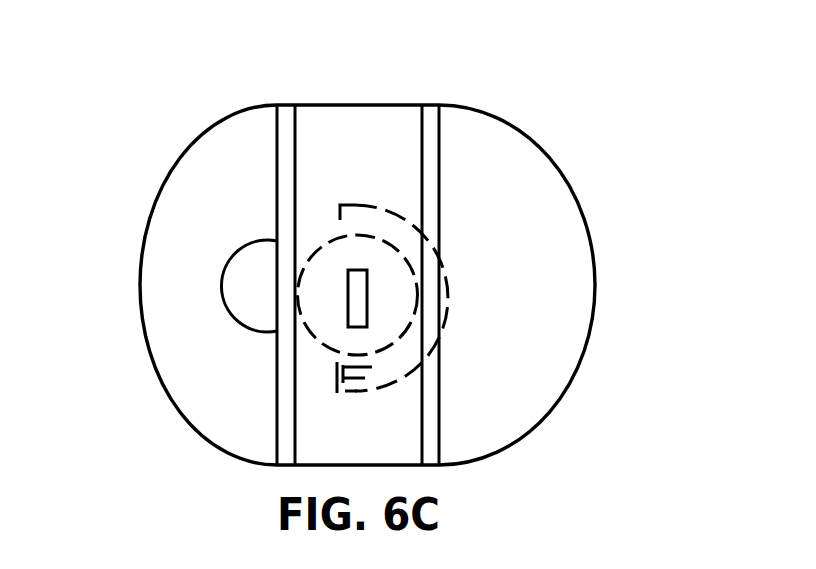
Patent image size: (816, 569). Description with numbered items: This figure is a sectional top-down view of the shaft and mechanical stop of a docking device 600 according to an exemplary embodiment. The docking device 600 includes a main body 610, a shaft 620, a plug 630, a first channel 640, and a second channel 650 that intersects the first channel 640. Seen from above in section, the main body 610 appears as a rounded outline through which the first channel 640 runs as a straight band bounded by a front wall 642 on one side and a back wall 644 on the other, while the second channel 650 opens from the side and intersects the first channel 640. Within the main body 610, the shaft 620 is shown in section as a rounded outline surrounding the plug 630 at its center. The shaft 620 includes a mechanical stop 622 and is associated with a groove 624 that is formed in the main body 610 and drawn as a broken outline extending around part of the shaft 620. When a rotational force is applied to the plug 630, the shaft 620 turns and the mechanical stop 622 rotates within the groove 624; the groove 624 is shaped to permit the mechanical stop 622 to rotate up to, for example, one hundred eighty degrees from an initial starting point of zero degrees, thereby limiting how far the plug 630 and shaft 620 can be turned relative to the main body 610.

The docking device 600 is at (138, 358).
The main body 610 is at (502, 197).
The shaft 620 is at (385, 342).
The mechanical stop 622 is at (352, 372).
The groove 624 is at (390, 214).
The plug 630 is at (357, 295).
The first channel 640 is at (333, 175).
The front wall 642 is at (287, 114).
The back wall 644 is at (429, 123).
The second channel 650 is at (258, 285).